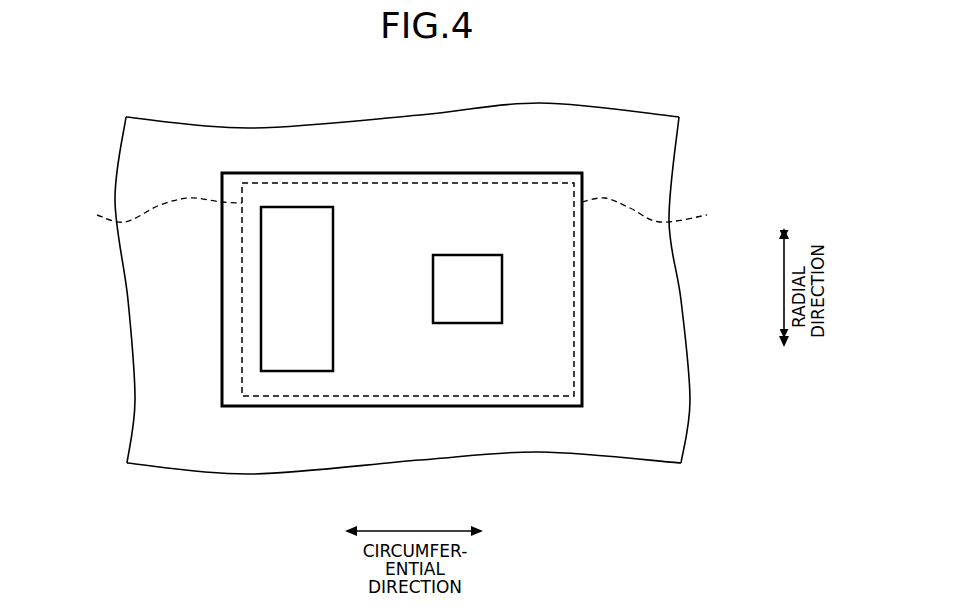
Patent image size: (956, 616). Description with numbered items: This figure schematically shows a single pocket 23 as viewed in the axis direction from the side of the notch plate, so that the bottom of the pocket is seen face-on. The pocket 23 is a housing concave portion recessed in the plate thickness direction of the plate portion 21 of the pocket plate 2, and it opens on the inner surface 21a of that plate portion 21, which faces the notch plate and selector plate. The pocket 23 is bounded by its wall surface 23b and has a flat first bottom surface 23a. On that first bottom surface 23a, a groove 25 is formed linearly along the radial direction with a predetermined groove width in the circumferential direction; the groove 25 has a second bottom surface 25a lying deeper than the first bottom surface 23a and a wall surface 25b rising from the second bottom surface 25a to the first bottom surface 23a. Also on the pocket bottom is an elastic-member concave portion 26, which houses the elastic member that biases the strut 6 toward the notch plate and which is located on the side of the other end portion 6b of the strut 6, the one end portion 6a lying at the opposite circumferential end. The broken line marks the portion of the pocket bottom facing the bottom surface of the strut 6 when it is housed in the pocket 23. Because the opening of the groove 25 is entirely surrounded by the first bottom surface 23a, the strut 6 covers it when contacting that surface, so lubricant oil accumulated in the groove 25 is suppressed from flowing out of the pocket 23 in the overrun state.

The pocket plate 2 is at (439, 288).
The plate portion 21 is at (676, 172).
The inner surface 21a is at (633, 282).
The pocket 23 is at (365, 170).
The first bottom surface 23a is at (387, 288).
The wall surface of the pocket 23b is at (223, 345).
The groove 25 is at (296, 382).
The second bottom surface 25a is at (300, 297).
The wall surface of the groove 25b is at (262, 244).
The elastic-member concave portion 26 is at (470, 332).
The strut 6 is at (537, 400).
The one end portion of the strut 6a is at (158, 212).
The other end portion of the strut 6b is at (657, 212).